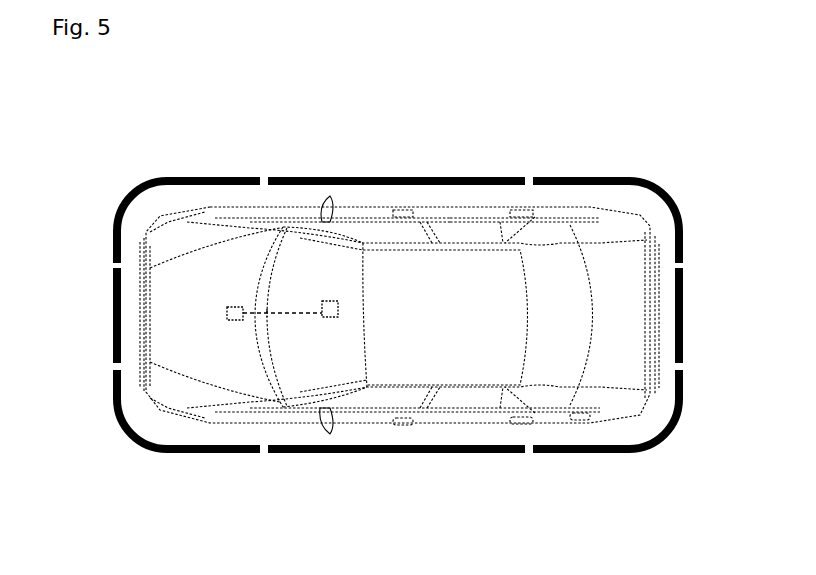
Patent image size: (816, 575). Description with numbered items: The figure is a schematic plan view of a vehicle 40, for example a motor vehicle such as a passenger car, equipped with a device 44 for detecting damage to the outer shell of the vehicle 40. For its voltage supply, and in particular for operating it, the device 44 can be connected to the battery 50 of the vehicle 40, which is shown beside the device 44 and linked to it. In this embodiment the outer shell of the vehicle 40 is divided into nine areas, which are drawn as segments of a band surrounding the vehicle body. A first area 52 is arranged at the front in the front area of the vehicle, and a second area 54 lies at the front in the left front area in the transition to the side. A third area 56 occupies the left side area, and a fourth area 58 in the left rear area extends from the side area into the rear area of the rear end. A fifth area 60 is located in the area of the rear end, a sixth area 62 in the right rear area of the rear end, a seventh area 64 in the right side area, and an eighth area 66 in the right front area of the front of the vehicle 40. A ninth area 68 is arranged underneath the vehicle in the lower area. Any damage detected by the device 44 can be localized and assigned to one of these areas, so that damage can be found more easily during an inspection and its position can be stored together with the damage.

The vehicle 40 is at (180, 150).
The device 44 is at (331, 300).
The battery 50 is at (238, 306).
The first area 52 is at (112, 312).
The second area 54 is at (152, 447).
The third area 56 is at (376, 457).
The fourth area 58 is at (643, 447).
The fifth area 60 is at (683, 325).
The sixth area 62 is at (627, 183).
The seventh area 64 is at (417, 178).
The eighth area 66 is at (127, 205).
The ninth area 68 is at (465, 207).